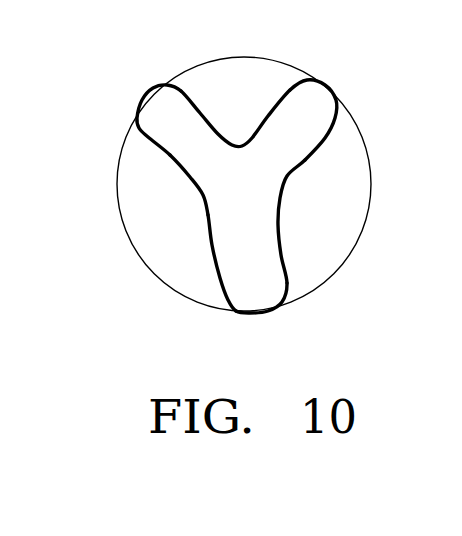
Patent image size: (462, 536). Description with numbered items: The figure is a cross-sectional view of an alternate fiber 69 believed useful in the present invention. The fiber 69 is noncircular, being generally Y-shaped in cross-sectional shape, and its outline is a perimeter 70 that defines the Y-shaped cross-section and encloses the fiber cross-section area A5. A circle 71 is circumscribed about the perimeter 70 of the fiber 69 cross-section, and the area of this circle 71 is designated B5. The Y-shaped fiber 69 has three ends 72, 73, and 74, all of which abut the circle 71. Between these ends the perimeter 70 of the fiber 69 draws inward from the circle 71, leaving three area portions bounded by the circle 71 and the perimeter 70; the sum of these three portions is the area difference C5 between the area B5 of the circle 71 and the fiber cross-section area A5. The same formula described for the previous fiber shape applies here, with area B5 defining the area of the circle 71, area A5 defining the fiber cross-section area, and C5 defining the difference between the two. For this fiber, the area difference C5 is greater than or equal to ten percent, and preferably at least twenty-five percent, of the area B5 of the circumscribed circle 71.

The fiber 69 is at (263, 290).
The perimeter 70 is at (289, 168).
The circle 71 is at (367, 232).
The end 72 is at (140, 111).
The end 73 is at (320, 82).
The end 74 is at (240, 312).
The fiber cross-section area A5 is at (248, 207).
The area of the circle B5 is at (172, 257).
The area difference C5 is at (353, 153).